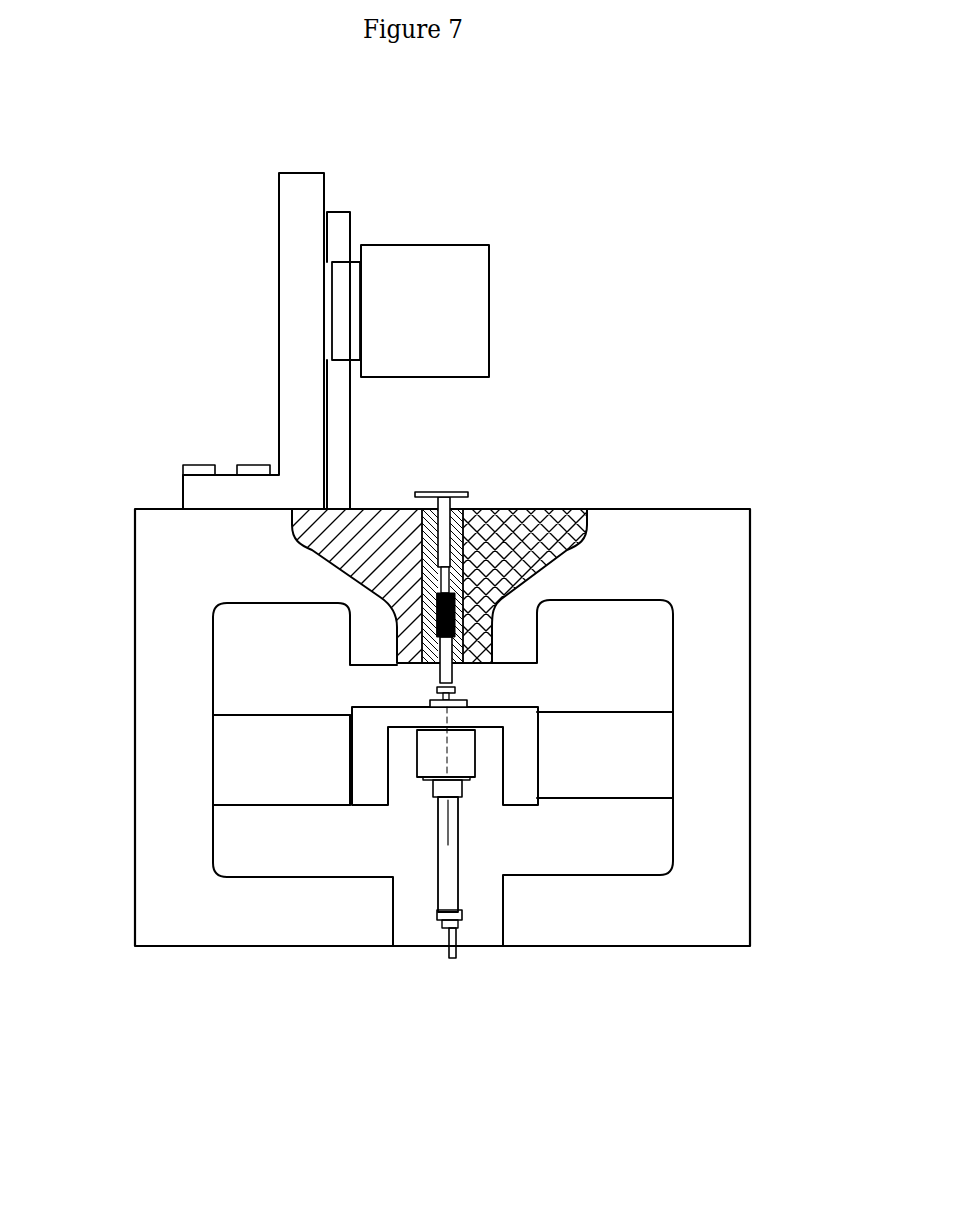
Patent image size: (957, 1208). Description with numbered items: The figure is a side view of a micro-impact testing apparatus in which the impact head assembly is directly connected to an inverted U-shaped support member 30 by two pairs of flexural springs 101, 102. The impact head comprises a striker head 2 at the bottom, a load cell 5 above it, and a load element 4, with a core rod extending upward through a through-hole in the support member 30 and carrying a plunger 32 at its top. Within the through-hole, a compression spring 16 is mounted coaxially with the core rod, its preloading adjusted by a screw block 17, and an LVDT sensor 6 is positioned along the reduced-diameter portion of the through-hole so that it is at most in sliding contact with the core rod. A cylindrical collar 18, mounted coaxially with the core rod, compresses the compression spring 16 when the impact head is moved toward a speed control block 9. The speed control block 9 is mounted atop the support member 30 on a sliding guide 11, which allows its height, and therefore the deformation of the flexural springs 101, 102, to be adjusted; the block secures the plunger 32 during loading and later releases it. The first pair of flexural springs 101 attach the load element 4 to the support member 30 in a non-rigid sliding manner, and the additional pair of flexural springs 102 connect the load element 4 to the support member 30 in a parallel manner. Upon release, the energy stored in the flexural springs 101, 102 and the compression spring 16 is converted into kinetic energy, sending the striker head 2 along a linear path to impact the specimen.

The striker head 2 is at (456, 961).
The load element 4 is at (497, 713).
The load cell 5 is at (445, 751).
The LVDT sensor 6 is at (466, 509).
The speed control block 9 is at (443, 297).
The sliding guide 11 is at (333, 260).
The compression spring 16 is at (588, 509).
The screw block 17 is at (462, 580).
The cylindrical collar 18 is at (462, 695).
The inverted U-shaped support member 30 is at (392, 728).
The plunger 32 is at (462, 487).
The first pair of flexural springs 101 is at (322, 716).
The second pair of flexural springs 102 is at (253, 803).